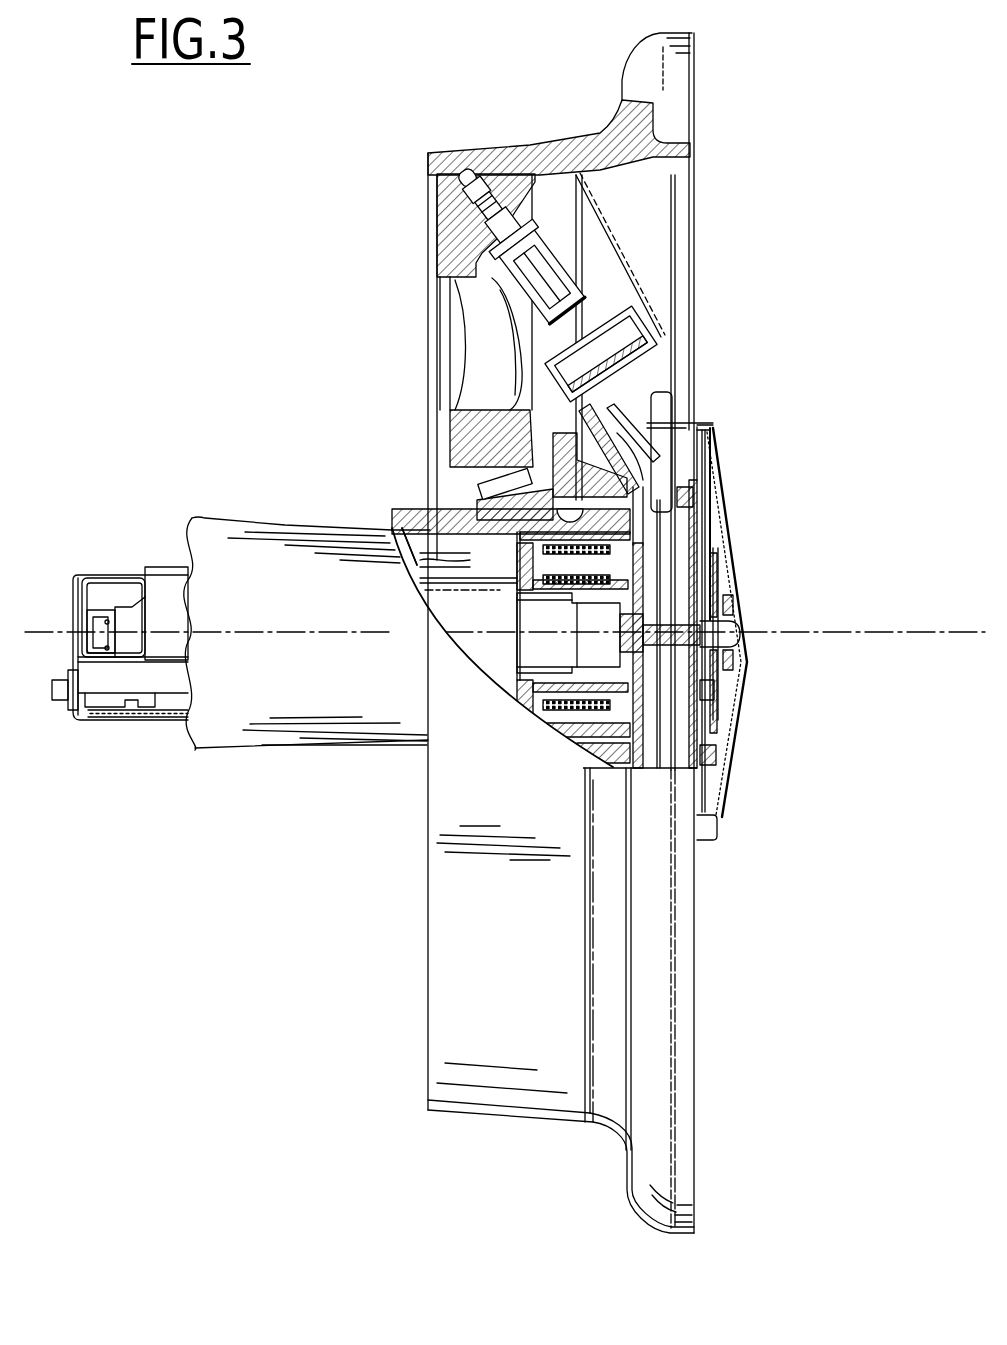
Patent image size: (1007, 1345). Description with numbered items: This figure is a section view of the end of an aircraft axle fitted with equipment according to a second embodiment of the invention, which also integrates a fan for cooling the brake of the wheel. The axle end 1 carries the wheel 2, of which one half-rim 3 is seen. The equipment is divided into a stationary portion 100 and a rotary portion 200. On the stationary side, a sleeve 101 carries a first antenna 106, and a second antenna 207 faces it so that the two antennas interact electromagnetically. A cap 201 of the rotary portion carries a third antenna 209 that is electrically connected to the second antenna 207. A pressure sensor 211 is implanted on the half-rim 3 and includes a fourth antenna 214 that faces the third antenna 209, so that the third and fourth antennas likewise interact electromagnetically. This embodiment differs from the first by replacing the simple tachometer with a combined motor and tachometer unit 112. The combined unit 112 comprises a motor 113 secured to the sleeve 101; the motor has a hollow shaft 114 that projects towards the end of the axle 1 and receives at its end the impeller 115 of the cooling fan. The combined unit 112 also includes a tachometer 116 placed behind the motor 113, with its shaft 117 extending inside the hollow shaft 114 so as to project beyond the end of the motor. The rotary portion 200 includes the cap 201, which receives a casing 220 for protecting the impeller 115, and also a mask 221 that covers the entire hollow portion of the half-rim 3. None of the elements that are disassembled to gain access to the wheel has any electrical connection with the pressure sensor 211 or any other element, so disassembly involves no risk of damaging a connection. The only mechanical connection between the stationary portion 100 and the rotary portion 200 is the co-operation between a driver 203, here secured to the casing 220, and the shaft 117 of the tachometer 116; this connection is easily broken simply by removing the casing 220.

The axle end 1 is at (273, 707).
The wheel 2 is at (737, 277).
The half-rim 3 is at (645, 160).
The stationary portion 100 is at (462, 537).
The sleeve 101 is at (633, 528).
The first antenna 106 is at (610, 592).
The combined motor and tachometer unit 112 is at (160, 540).
The motor 113 is at (405, 530).
The hollow shaft 114 is at (715, 690).
The impeller 115 is at (705, 755).
The tachometer 116 is at (123, 610).
The shaft 117 is at (715, 614).
The rotary portion 200 is at (751, 776).
The cap 201 is at (650, 478).
The driver 203 is at (690, 656).
The second antenna 207 is at (620, 563).
The third antenna 209 is at (658, 320).
The pressure sensor 211 is at (578, 247).
The fourth antenna 214 is at (580, 277).
The casing 220 is at (712, 440).
The mask 221 is at (662, 358).